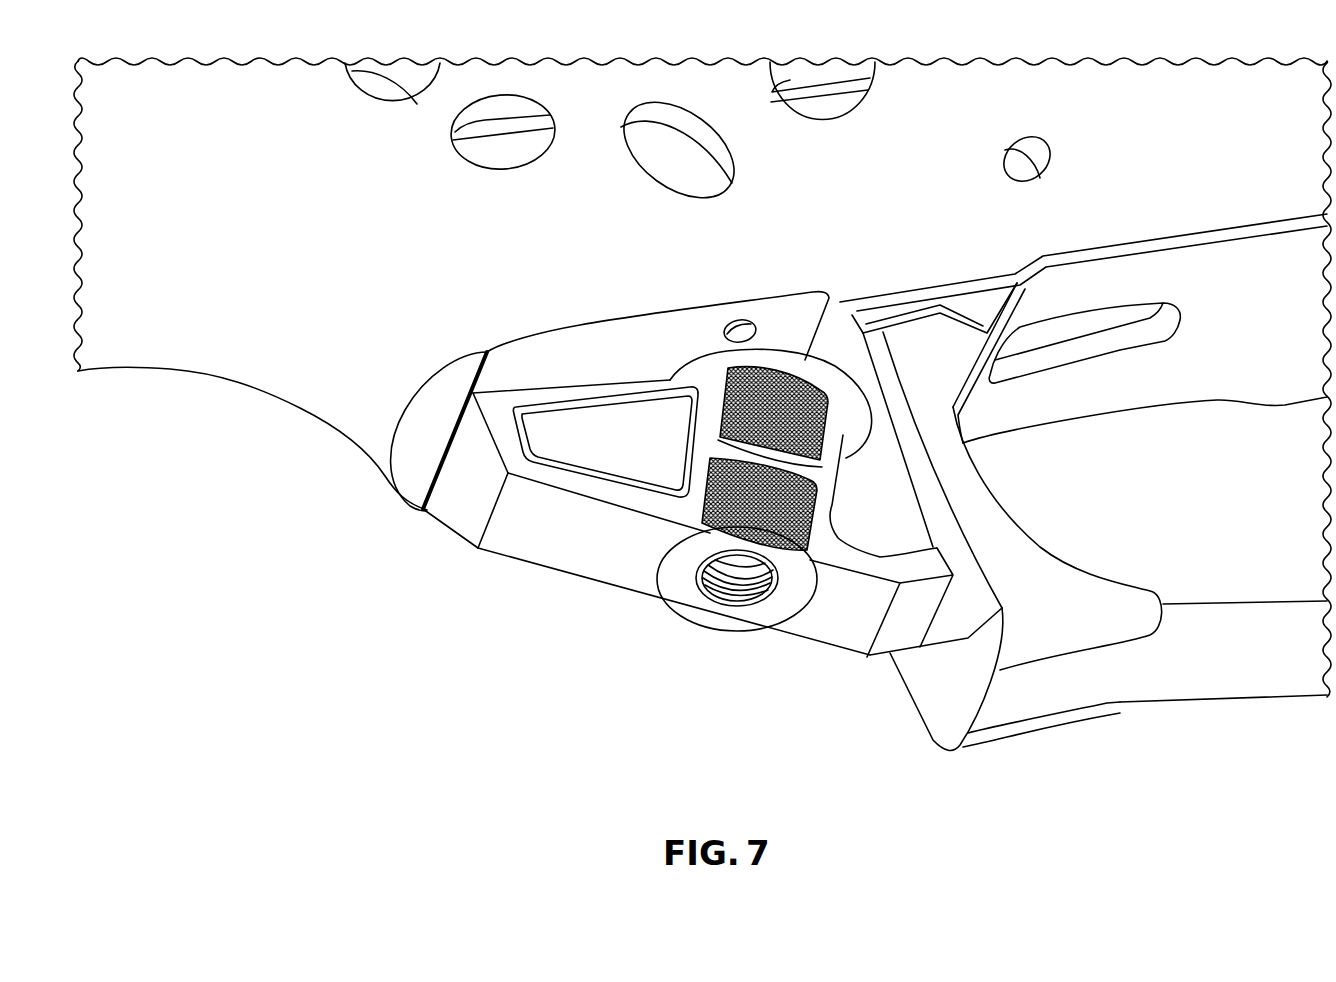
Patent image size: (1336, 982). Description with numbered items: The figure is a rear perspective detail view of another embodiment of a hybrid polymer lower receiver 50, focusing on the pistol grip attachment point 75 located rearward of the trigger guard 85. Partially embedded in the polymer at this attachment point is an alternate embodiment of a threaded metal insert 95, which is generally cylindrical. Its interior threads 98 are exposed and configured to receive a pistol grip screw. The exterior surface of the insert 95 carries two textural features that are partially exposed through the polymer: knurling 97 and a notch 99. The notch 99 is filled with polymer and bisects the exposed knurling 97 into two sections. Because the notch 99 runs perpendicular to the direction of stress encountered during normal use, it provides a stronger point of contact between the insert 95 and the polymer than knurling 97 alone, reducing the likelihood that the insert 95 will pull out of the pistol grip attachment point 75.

The hybrid polymer lower receiver 50 is at (274, 463).
The pistol grip attachment point 75 is at (530, 540).
The trigger guard 85 is at (1245, 698).
The threaded metal insert 95 is at (683, 587).
The knurling 97 is at (773, 503).
The interior threads 98 is at (727, 573).
The notch 99 is at (735, 442).